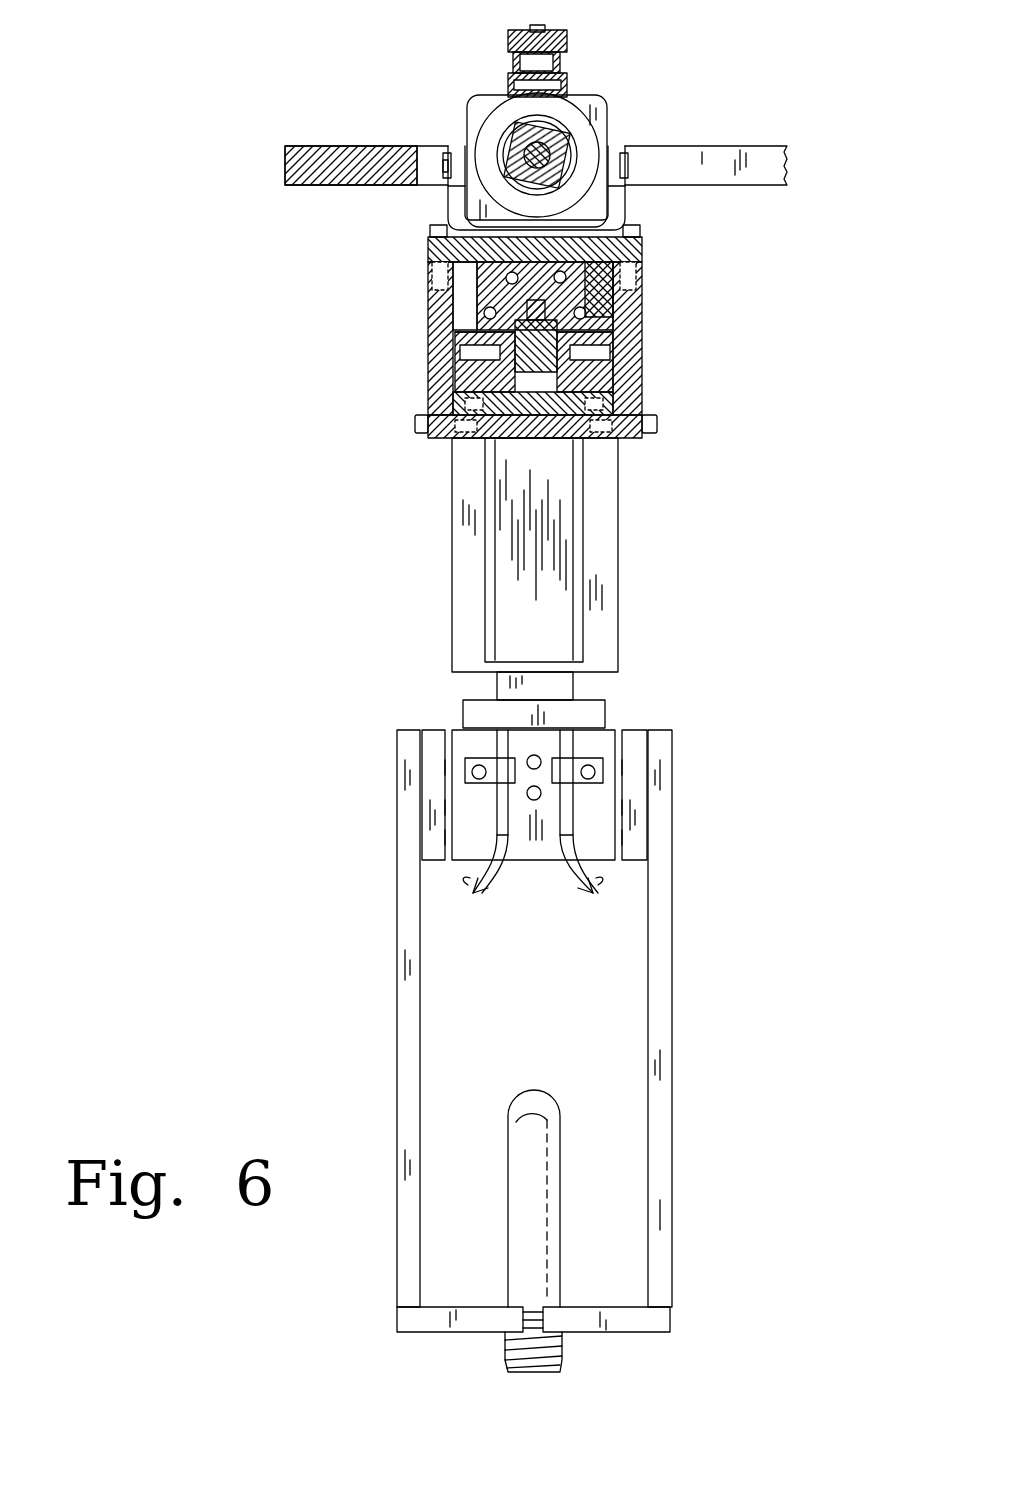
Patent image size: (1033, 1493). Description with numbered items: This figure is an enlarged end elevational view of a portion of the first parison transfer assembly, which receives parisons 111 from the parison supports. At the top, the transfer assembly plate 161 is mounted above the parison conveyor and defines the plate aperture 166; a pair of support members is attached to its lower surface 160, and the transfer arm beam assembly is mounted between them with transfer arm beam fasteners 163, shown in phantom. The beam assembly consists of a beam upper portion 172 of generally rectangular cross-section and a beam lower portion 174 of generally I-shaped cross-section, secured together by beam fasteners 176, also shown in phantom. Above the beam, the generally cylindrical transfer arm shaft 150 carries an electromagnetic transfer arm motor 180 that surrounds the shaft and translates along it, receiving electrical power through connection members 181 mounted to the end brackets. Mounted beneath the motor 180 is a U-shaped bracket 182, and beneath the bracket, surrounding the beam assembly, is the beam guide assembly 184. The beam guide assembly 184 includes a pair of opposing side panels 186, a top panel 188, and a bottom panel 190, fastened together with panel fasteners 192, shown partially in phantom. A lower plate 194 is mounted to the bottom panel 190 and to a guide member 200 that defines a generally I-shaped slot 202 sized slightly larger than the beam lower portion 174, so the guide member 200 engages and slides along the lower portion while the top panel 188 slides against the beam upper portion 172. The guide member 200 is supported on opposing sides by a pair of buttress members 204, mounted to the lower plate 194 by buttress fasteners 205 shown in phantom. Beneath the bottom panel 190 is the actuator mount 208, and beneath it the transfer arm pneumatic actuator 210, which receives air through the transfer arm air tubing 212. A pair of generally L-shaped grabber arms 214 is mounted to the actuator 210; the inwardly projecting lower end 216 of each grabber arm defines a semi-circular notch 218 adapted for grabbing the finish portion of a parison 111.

The parison 111 is at (530, 1112).
The transfer arm shaft 150 is at (548, 153).
The lower surface 160 is at (287, 186).
The transfer assembly plate 161 is at (370, 146).
The transfer arm beam fasteners 163 is at (586, 280).
The plate aperture 166 is at (430, 160).
The beam upper portion 172 is at (455, 308).
The beam lower portion 174 is at (515, 348).
The beam fasteners 176 is at (600, 315).
The electromagnetic transfer arm motor 180 is at (585, 110).
The connection members 181 is at (568, 38).
The U-shaped bracket 182 is at (625, 205).
The beam guide assembly 184 is at (433, 297).
The side panels 186 is at (613, 398).
The top panel 188 is at (433, 248).
The bottom panel 190 is at (578, 443).
The panel fasteners 192 is at (433, 225).
The lower plate 194 is at (548, 443).
The guide member 200 is at (497, 440).
The I-shaped slot 202 is at (613, 392).
The buttress members 204 is at (613, 345).
The buttress fasteners 205 is at (640, 408).
The actuator mount 208 is at (460, 618).
The transfer arm pneumatic actuator 210 is at (607, 725).
The transfer arm air tubing 212 is at (592, 890).
The grabber arms 214 is at (662, 975).
The lower end 216 is at (400, 1318).
The semi-circular notch 218 is at (510, 1305).